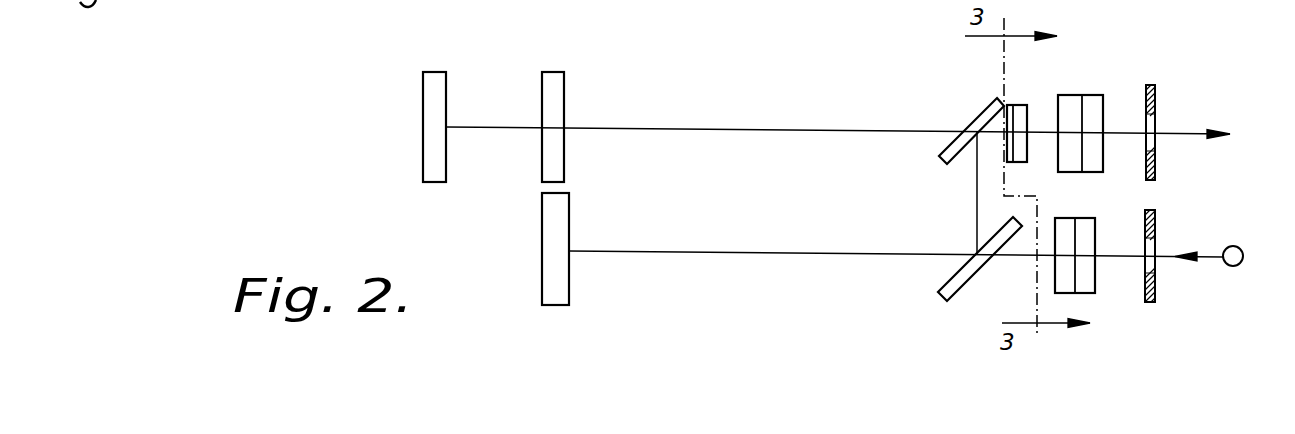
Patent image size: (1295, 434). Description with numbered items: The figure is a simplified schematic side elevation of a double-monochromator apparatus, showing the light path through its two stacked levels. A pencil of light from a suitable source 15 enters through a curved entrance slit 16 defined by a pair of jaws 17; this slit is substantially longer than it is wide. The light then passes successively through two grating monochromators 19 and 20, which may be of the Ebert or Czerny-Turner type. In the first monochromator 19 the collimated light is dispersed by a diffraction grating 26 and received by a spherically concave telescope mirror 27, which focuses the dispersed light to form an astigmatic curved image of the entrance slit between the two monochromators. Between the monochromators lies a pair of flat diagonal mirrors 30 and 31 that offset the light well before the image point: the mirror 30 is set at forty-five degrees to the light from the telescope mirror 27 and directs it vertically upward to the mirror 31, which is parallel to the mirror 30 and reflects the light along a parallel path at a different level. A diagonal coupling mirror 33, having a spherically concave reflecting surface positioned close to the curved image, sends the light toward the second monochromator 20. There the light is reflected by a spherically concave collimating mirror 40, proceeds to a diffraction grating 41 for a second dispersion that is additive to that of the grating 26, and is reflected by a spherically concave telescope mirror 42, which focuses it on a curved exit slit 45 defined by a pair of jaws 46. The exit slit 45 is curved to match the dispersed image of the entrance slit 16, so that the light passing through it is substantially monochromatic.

The source 15 is at (1233, 266).
The entrance slit 16 is at (1152, 245).
The jaws 17 is at (1156, 297).
The grating monochromator 19 is at (523, 251).
The grating monochromator 20 is at (408, 127).
The diffraction grating 26 is at (1085, 221).
The telescope mirror 27 is at (542, 213).
The diagonal mirror 30 is at (944, 300).
The diagonal mirror 31 is at (942, 158).
The diagonal coupling mirror 33 is at (1019, 105).
The collimating mirror 40 is at (423, 89).
The diffraction grating 41 is at (1100, 103).
The telescope mirror 42 is at (565, 93).
The exit slit 45 is at (1152, 120).
The jaws 46 is at (1156, 165).